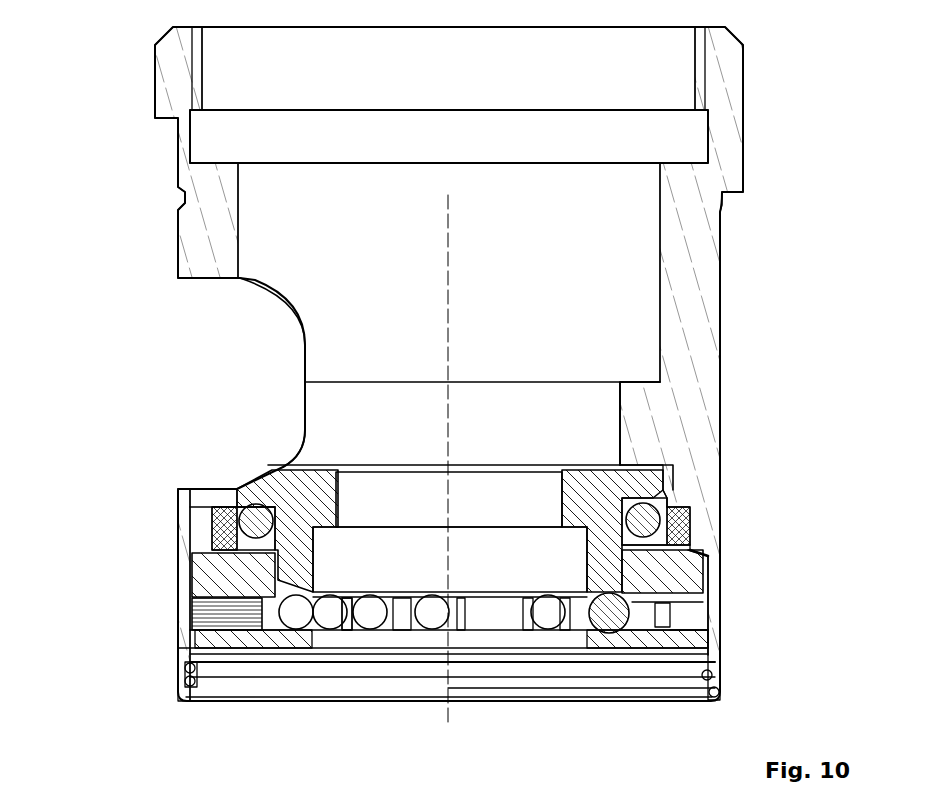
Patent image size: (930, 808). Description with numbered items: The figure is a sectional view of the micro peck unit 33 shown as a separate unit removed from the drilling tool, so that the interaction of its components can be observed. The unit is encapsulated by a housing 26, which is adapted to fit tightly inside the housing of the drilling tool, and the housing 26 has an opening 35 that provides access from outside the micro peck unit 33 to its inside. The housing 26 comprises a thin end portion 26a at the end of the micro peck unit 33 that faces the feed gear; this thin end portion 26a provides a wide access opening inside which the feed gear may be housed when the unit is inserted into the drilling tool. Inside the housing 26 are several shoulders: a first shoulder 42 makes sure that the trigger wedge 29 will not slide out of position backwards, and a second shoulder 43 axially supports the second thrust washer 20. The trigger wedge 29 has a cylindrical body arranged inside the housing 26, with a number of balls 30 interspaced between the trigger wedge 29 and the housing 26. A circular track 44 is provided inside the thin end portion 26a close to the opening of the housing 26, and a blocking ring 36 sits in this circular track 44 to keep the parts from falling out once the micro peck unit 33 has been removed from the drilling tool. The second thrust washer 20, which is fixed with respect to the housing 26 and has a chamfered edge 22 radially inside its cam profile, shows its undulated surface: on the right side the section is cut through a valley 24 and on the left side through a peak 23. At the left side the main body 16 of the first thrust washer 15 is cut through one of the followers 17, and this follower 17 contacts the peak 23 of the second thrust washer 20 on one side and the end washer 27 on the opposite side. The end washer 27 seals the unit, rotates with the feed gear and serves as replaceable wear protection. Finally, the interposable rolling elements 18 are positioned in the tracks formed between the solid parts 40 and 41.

The micro peck unit 33 is at (108, 181).
The opening 35 is at (195, 280).
The housing 26 is at (700, 300).
The thin end portion 26a is at (178, 648).
The first shoulder 42 is at (641, 449).
The trigger wedge 29 is at (627, 487).
The balls 30 is at (648, 517).
The chamfered edge 22 is at (275, 593).
The second shoulder 43 is at (707, 540).
The second thrust washer 20 is at (717, 558).
The peak 23 is at (680, 583).
The interposable rolling elements 18 is at (625, 612).
The solid part 41 is at (500, 622).
The solid part 40 is at (352, 622).
The main body 16 is at (668, 620).
The first thrust washer 15 is at (705, 618).
The end washer 27 is at (670, 642).
The circular track 44 is at (709, 683).
The blocking ring 36 is at (245, 688).
The follower 17 is at (205, 615).
The valley 24 is at (212, 597).